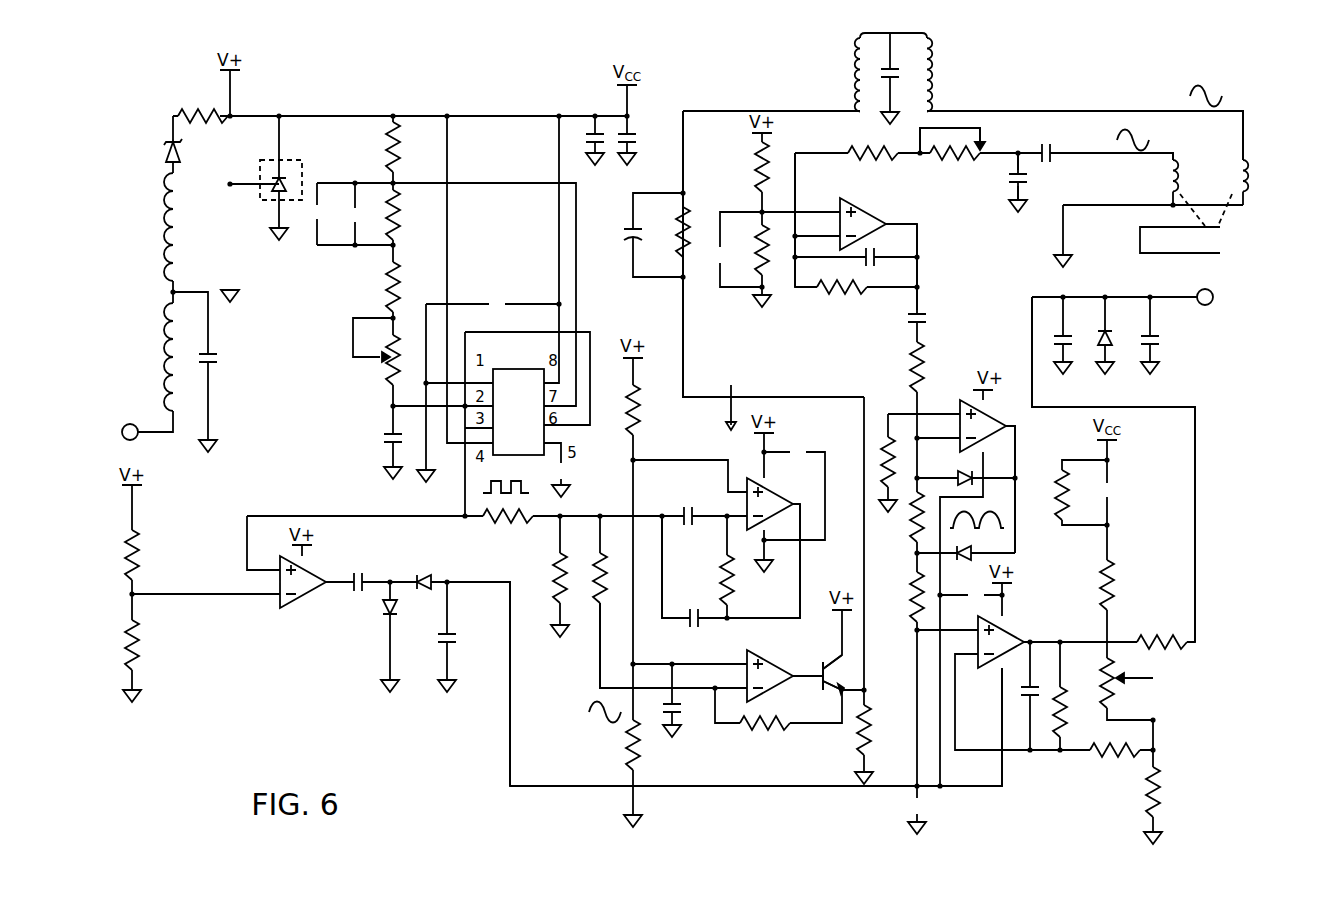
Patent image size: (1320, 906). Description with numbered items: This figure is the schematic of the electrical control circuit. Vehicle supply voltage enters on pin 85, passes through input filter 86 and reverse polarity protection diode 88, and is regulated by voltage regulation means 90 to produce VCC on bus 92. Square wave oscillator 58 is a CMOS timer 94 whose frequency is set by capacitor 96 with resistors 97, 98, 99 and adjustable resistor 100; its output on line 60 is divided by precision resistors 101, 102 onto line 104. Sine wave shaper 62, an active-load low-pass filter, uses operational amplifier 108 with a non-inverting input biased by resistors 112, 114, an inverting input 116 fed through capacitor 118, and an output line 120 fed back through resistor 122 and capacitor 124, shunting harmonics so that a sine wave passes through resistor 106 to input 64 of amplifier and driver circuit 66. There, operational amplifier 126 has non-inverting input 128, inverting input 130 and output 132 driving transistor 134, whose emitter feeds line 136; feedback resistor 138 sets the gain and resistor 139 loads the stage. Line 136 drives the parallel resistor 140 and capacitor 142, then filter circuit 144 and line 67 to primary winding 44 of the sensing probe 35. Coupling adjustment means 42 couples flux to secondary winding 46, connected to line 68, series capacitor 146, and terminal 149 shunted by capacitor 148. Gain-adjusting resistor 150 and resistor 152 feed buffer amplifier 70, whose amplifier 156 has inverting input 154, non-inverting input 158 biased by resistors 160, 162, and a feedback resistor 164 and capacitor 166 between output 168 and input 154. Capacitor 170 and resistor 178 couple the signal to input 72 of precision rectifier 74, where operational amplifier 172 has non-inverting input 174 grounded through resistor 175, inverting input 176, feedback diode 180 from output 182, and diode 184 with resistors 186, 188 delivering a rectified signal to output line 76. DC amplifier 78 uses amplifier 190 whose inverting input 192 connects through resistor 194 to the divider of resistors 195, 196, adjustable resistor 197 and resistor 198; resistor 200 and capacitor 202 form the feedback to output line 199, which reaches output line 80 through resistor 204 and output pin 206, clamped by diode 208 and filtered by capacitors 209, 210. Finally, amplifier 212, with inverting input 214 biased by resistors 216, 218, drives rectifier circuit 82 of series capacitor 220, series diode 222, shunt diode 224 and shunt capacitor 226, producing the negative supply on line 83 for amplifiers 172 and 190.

The sensing coil assembly 35 is at (1237, 218).
The coupling adjustment means 42 is at (1174, 253).
The primary winding 44 is at (1235, 162).
The secondary winding 46 is at (1168, 178).
The square wave oscillator 58 is at (378, 312).
The line 60 is at (420, 516).
The sine wave shaper 62 is at (718, 382).
The input line 64 is at (600, 688).
The amplifier and driver circuit 66 is at (750, 743).
The line 67 is at (1000, 110).
The line 68 is at (1166, 150).
The buffer amplifier 70 is at (932, 260).
The input line 72 is at (924, 402).
The precision rectifier 74 is at (1024, 518).
The output line 76 is at (914, 632).
The DC amplifier 78 is at (972, 792).
The output line 80 is at (1194, 550).
The rectifier circuit 82 is at (331, 676).
The negative voltage line 83 is at (506, 758).
The pin 85 is at (126, 428).
The input filter 86 is at (154, 238).
The reverse polarity protection diode 88 is at (171, 143).
The voltage regulation means 90 is at (300, 162).
The bus 92 is at (366, 116).
The CMOS timer 94 is at (517, 369).
The capacitor 96 is at (386, 432).
The resistor 97 is at (400, 153).
The resistor 98 is at (400, 222).
The resistor 99 is at (400, 281).
The adjustable resistor 100 is at (390, 380).
The precision resistor 101 is at (496, 519).
The precision resistor 102 is at (556, 566).
The line 104 is at (582, 514).
The resistor 106 is at (599, 604).
The operational amplifier 108 is at (785, 494).
The resistor 112 is at (641, 410).
The resistor 114 is at (628, 740).
The inverting input 116 is at (716, 510).
The capacitor 118 is at (680, 513).
The output line 120 is at (816, 586).
The resistor 122 is at (722, 584).
The capacitor 124 is at (699, 622).
The operational amplifier 126 is at (774, 662).
The non-inverting input 128 is at (684, 664).
The inverting input 130 is at (692, 692).
The output 132 is at (820, 666).
The transistor 134 is at (830, 690).
The line 136 is at (826, 397).
The feedback resistor 138 is at (788, 726).
The resistor 139 is at (874, 728).
The resistor 140 is at (688, 216).
The capacitor 142 is at (624, 232).
The filter circuit 144 is at (838, 86).
The series capacitor 146 is at (1056, 150).
The capacitor 148 is at (1023, 176).
The terminal 149 is at (1018, 150).
The gain-adjusting resistor 150 is at (950, 162).
The resistor 152 is at (860, 150).
The inverting input 154 is at (798, 182).
The amplifier 156 is at (878, 214).
The non-inverting input 158 is at (824, 209).
The resistor 160 is at (760, 182).
The resistor 162 is at (774, 274).
The resistor 164 is at (856, 295).
The capacitor 166 is at (868, 256).
The output 168 is at (920, 243).
The series capacitor 170 is at (930, 314).
The operational amplifier 172 is at (1008, 418).
The non-inverting input 174 is at (924, 403).
The resistor 175 is at (886, 416).
The inverting input 176 is at (938, 427).
The resistor 178 is at (926, 362).
The diode 180 is at (958, 472).
The output 182 is at (1018, 452).
The diode 184 is at (1017, 556).
The resistor 186 is at (914, 594).
The resistor 188 is at (904, 538).
The amplifier 190 is at (1008, 628).
The inverting input 192 is at (1016, 756).
The series resistor 194 is at (1118, 764).
The resistor 195 is at (1072, 508).
The resistor 196 is at (1118, 588).
The adjustable resistor 197 is at (1120, 668).
The resistor 198 is at (1160, 792).
The output line 199 is at (1062, 640).
The resistor 200 is at (1070, 720).
The capacitor 202 is at (1020, 692).
The resistor 204 is at (1142, 636).
The output pin 206 is at (1208, 306).
The diode 208 is at (1112, 370).
The capacitor 209 is at (1073, 365).
The capacitor 210 is at (1158, 342).
The amplifier 212 is at (300, 602).
The inverting input 214 is at (166, 594).
The resistor 216 is at (140, 548).
The resistor 218 is at (142, 656).
The series capacitor 220 is at (362, 572).
The series diode 222 is at (414, 572).
The shunt diode 224 is at (382, 618).
The shunt capacitor 226 is at (442, 644).